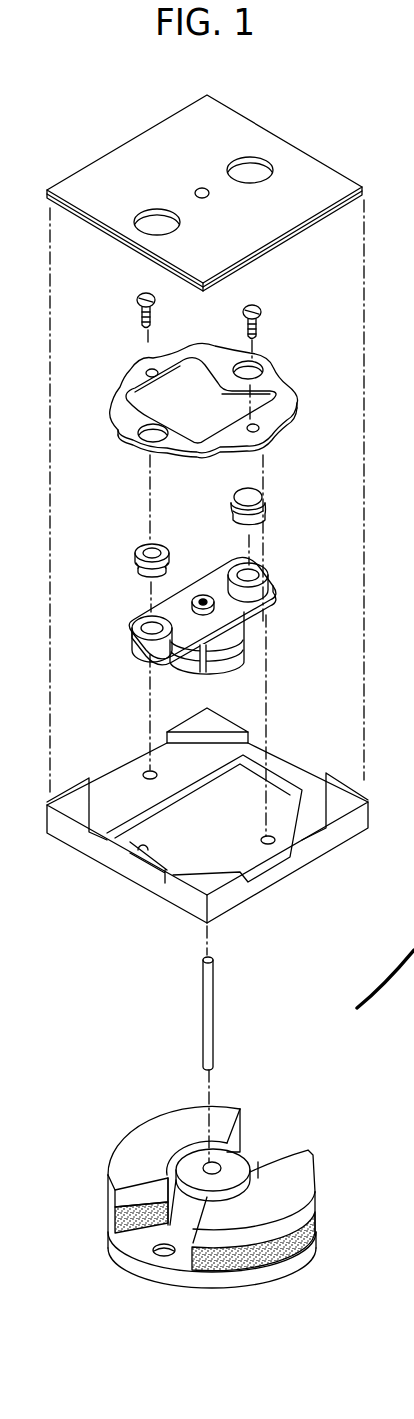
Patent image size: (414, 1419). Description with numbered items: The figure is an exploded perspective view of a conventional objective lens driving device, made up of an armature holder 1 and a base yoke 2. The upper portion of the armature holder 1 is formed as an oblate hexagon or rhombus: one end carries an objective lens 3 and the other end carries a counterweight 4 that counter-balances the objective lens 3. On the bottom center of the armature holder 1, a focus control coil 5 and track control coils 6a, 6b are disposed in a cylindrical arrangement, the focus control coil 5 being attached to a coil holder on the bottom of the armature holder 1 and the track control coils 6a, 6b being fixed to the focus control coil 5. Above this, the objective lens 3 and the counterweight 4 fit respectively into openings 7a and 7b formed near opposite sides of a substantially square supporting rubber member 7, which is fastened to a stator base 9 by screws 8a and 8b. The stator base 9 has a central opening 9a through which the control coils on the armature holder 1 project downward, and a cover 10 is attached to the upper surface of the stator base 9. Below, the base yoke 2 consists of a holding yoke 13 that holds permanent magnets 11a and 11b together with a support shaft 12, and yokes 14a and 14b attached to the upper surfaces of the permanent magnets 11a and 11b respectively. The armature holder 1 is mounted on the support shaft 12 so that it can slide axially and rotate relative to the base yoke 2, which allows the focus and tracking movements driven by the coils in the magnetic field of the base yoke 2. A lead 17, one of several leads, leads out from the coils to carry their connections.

The armature holder 1 is at (280, 617).
The base yoke 2 is at (313, 1131).
The objective lens 3 is at (253, 497).
The counterweight 4 is at (163, 549).
The focus control coil 5 is at (227, 676).
The track control coil 6a is at (173, 663).
The track control coil 6b is at (237, 662).
The supporting rubber member 7 is at (282, 408).
The opening 7a is at (152, 434).
The opening 7b is at (248, 373).
The screw 8a is at (137, 305).
The screw 8b is at (260, 326).
The stator base 9 is at (365, 817).
The central opening 9a is at (147, 848).
The cover 10 is at (262, 145).
The permanent magnet 11a is at (112, 1223).
The permanent magnet 11b is at (313, 1238).
The support shaft 12 is at (213, 1028).
The holding yoke 13 is at (133, 1268).
The yoke 14a is at (137, 1117).
The yoke 14b is at (283, 1180).
The lead 17 is at (402, 970).